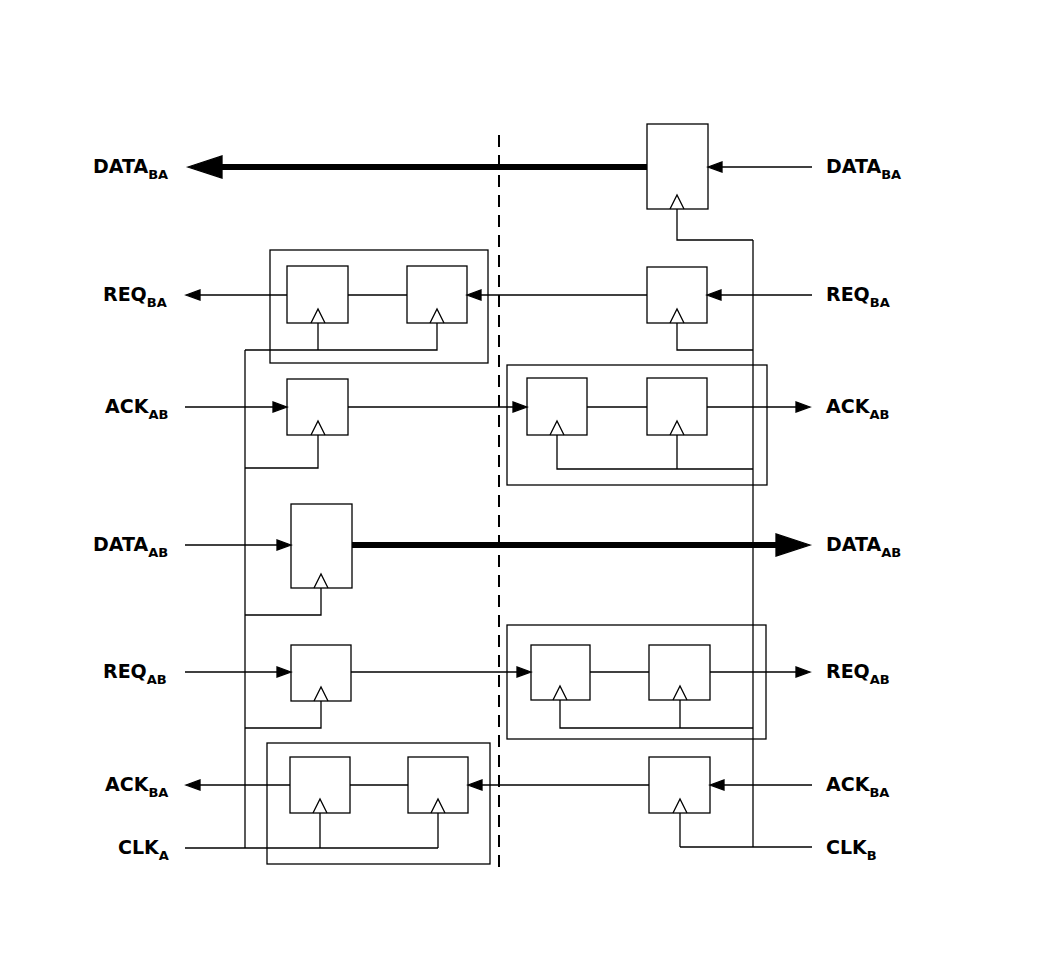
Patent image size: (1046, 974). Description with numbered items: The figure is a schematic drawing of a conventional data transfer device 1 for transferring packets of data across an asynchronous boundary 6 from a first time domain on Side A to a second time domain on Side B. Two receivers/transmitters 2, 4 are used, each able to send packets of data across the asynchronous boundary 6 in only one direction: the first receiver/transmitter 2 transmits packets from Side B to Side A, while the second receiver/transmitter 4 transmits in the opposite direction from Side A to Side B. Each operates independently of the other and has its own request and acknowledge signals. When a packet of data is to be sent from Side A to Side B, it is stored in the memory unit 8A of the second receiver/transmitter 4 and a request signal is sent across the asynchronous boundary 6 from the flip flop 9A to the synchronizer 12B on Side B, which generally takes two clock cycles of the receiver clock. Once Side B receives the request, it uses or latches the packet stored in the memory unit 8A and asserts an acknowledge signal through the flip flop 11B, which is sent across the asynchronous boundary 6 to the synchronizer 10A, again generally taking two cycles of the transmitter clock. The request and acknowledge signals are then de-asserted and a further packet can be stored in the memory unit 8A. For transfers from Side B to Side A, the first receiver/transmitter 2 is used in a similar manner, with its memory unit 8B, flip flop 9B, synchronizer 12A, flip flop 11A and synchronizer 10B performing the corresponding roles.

The data transfer device 1 is at (249, 108).
The first receiver/transmitter 2 is at (118, 448).
The second receiver/transmitter 4 is at (117, 512).
The asynchronous boundary 6 is at (435, 112).
The memory unit 8A is at (286, 517).
The memory unit 8B is at (714, 130).
The flip flop 9A is at (334, 641).
The flip flop 9B is at (647, 266).
The synchronizer 10A is at (413, 737).
The synchronizer 10B is at (630, 494).
The flip flop 11A is at (330, 439).
The flip flop 11B is at (634, 812).
The synchronizer 12A is at (367, 212).
The synchronizer 12B is at (670, 611).